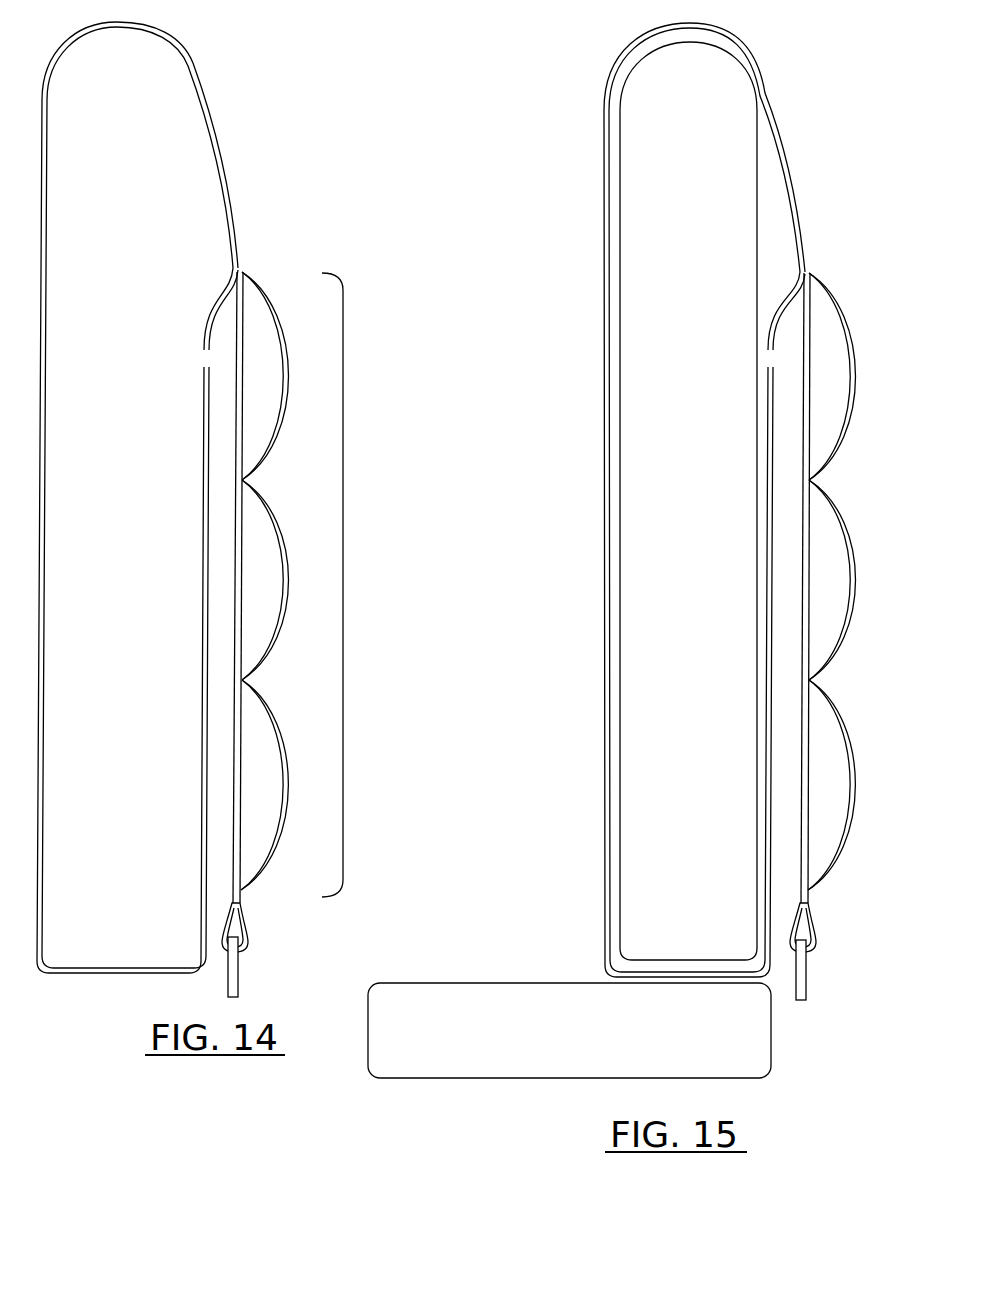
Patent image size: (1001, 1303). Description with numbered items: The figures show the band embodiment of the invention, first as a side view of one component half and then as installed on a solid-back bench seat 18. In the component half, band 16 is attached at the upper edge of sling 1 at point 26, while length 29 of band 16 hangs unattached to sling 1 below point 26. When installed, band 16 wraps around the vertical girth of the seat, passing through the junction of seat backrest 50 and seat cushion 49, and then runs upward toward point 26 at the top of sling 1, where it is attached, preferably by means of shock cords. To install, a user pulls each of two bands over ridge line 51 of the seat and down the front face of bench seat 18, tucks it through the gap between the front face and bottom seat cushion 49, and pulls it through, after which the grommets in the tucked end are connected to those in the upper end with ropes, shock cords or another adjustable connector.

In FIG. 14, the sling 1 is at (343, 572).
In FIG. 15, the sling 1 is at (857, 582).
In FIG. 14, the band 16 is at (223, 168).
In FIG. 15, the band 16 is at (600, 406).
In FIG. 15, the solid-back bench seat 18 is at (733, 163).
In FIG. 14, the point 26 is at (240, 270).
In FIG. 15, the point 26 is at (807, 271).
In FIG. 14, the length 29 is at (203, 330).
In FIG. 15, the seat cushion 49 is at (503, 992).
In FIG. 15, the seat backrest 50 is at (647, 505).
In FIG. 15, the ridge line 51 is at (653, 52).